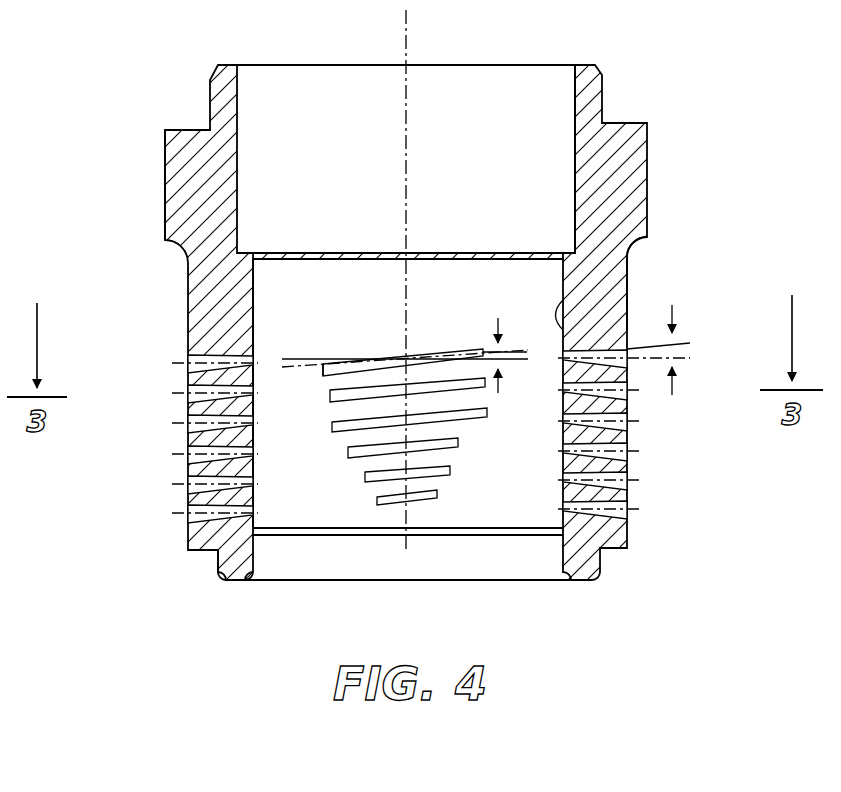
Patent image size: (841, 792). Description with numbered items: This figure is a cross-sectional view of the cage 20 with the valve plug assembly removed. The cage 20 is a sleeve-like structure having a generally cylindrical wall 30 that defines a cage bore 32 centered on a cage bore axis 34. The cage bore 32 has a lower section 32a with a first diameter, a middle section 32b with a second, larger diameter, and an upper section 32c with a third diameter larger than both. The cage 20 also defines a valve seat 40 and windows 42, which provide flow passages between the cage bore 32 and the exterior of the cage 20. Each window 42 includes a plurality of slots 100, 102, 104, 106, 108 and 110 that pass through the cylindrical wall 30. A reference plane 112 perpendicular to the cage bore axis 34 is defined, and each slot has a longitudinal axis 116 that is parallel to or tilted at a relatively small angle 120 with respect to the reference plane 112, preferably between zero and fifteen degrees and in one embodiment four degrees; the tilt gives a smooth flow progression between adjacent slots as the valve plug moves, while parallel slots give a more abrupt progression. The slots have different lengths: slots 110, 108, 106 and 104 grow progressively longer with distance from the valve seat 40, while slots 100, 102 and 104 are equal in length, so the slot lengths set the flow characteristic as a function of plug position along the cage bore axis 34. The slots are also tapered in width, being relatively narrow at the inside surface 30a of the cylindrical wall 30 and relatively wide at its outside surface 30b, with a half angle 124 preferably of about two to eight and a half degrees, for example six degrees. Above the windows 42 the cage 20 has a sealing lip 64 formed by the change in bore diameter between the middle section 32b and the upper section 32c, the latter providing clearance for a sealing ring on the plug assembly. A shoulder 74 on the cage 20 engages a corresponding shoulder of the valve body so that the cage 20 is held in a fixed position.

The cage 20 is at (154, 145).
The cylindrical wall 30 is at (188, 272).
The inside surface 30a is at (628, 256).
The outside surface 30b is at (627, 298).
The cage bore 32 is at (493, 548).
The lower section 32a is at (563, 532).
The middle section 32b is at (253, 295).
The upper section 32c is at (575, 100).
The cage bore axis 34 is at (405, 168).
The valve seat 40 is at (562, 527).
The window 42 is at (395, 345).
The sealing lip 64 is at (573, 250).
The shoulder 74 is at (203, 552).
The slot 100 is at (188, 357).
The slot 102 is at (188, 388).
The slot 104 is at (188, 418).
The slot 106 is at (188, 449).
The slot 108 is at (188, 479).
The slot 110 is at (188, 508).
The reference plane 112 is at (327, 365).
The longitudinal axis 116 is at (524, 350).
The angle 120 is at (497, 385).
The half angle 124 is at (692, 346).